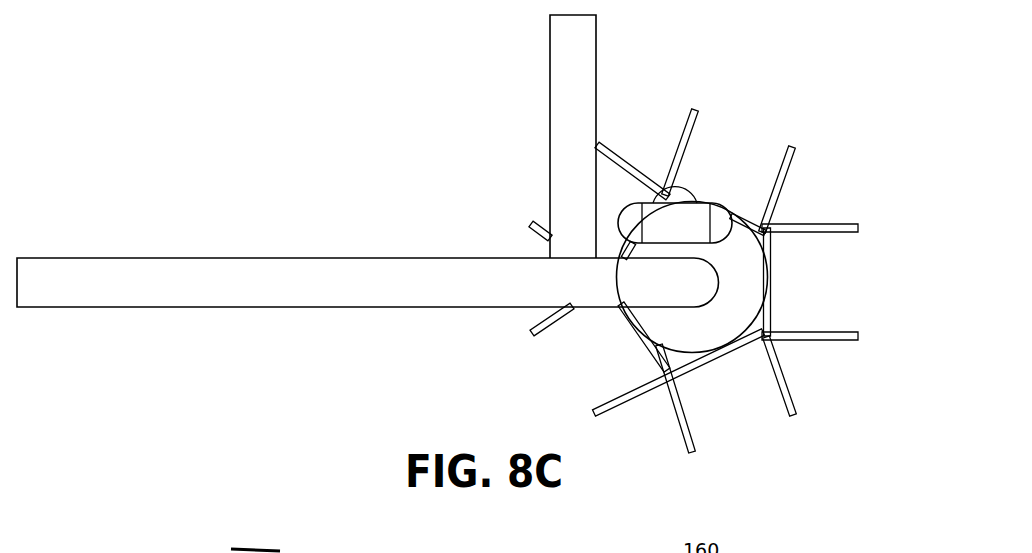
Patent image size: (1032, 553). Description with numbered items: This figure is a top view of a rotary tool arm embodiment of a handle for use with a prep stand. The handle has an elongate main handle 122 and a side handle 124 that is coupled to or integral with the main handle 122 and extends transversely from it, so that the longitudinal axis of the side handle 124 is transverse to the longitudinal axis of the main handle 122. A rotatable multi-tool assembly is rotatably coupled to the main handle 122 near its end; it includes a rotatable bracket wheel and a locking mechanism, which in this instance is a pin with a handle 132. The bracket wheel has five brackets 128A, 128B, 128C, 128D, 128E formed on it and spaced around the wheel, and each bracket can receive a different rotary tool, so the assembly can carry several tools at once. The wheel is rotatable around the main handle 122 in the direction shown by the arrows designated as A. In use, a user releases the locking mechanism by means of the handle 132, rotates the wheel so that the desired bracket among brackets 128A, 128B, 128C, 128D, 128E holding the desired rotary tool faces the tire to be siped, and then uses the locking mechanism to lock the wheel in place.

The main handle 122 is at (133, 272).
The side handle 124 is at (557, 71).
The bracket 128A is at (800, 295).
The bracket 128B is at (716, 168).
The bracket 128C is at (615, 190).
The bracket 128D is at (598, 340).
The bracket 128E is at (742, 385).
The handle 132 is at (680, 222).
The arrows A is at (873, 197).